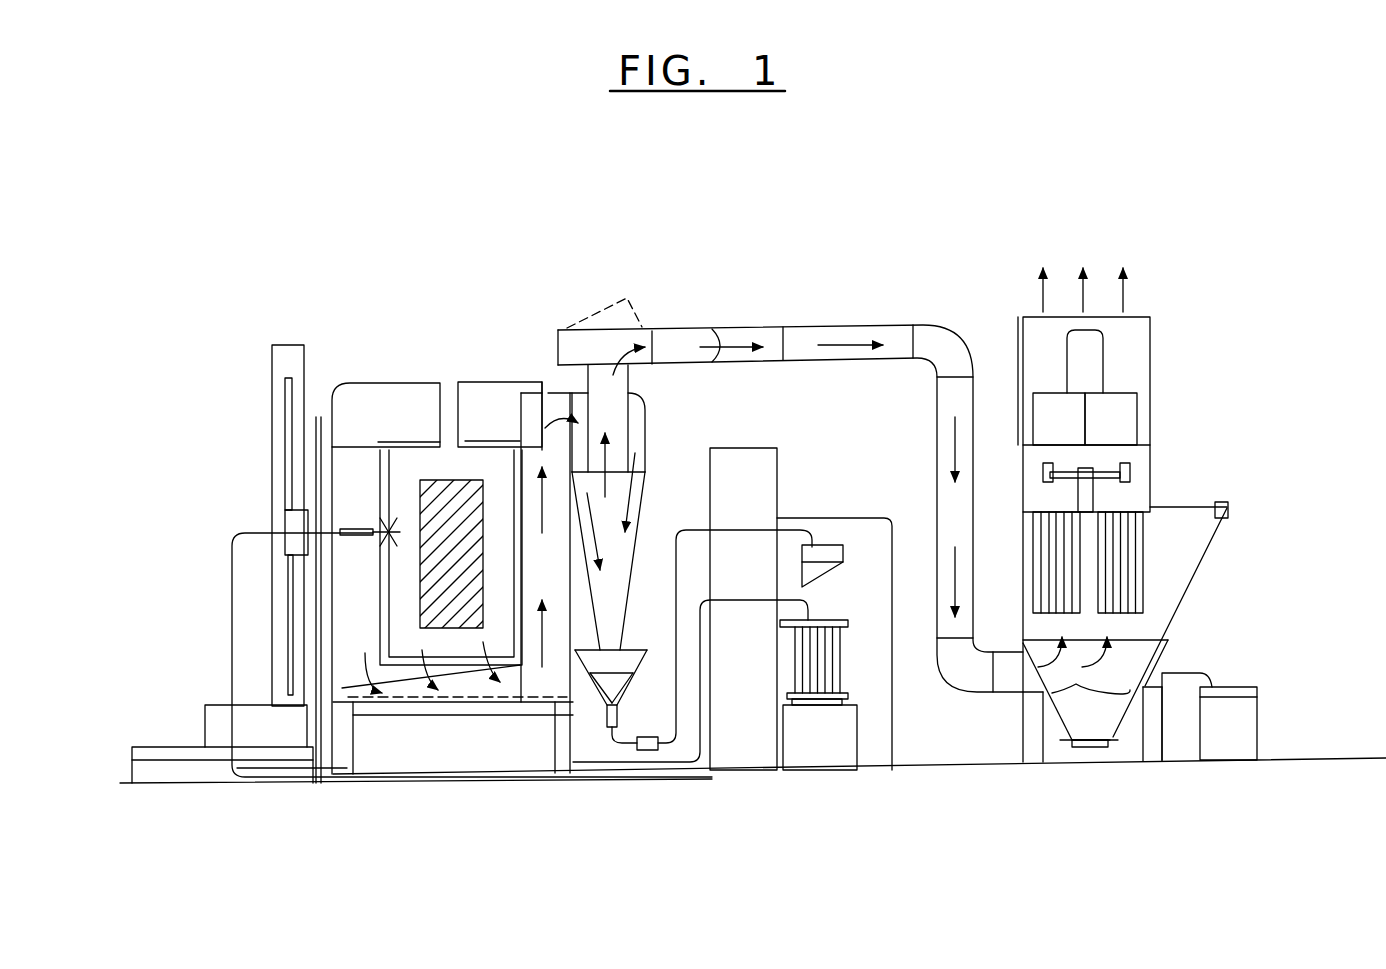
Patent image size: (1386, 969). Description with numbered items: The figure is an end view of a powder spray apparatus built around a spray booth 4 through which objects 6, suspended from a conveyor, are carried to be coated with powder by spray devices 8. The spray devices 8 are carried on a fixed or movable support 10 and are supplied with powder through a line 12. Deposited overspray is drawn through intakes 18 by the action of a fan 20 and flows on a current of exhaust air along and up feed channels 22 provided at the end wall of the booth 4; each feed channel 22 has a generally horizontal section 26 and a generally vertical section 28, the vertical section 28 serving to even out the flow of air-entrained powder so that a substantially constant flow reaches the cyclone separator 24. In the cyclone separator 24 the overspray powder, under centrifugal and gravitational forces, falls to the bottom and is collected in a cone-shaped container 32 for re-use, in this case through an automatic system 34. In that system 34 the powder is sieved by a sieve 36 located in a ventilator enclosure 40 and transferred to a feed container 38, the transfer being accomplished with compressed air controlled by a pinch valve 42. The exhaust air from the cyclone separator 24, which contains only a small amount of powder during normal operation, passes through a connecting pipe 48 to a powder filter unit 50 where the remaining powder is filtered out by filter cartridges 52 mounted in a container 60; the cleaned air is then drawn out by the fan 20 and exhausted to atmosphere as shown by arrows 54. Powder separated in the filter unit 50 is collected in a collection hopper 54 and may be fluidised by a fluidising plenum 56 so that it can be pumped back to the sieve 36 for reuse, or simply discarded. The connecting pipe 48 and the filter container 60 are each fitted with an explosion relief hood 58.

The spray booth 4 is at (370, 407).
The objects 6 is at (467, 477).
The spray devices 8 is at (397, 518).
The support 10 is at (283, 413).
The line 12 is at (222, 783).
The intakes 18 is at (493, 700).
The fan 20 is at (1097, 367).
The feed channels 22 is at (420, 645).
The cyclone separator 24 is at (637, 433).
The horizontal section 26 is at (462, 683).
The vertical section 28 is at (554, 577).
The cone-shaped container 32 is at (603, 687).
The automatic system 34 is at (752, 803).
The sieve 36 is at (833, 553).
The feed container 38 is at (850, 622).
The ventilator enclosure 40 is at (757, 465).
The pinch valve 42 is at (640, 750).
The connecting pipe 48 is at (808, 335).
The powder filter unit 50 is at (1270, 478).
The filter cartridges 52 is at (1150, 555).
The arrows / collection hopper 54 is at (1140, 292).
The fluidising plenum 56 is at (1090, 747).
The explosion relief hood 58 is at (608, 308).
The container 60 is at (1182, 507).